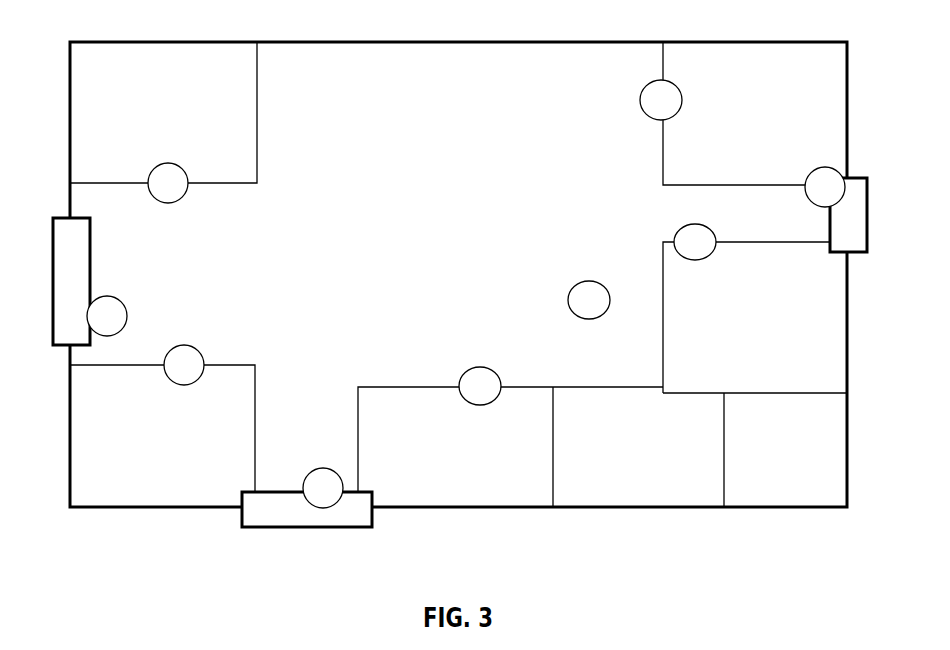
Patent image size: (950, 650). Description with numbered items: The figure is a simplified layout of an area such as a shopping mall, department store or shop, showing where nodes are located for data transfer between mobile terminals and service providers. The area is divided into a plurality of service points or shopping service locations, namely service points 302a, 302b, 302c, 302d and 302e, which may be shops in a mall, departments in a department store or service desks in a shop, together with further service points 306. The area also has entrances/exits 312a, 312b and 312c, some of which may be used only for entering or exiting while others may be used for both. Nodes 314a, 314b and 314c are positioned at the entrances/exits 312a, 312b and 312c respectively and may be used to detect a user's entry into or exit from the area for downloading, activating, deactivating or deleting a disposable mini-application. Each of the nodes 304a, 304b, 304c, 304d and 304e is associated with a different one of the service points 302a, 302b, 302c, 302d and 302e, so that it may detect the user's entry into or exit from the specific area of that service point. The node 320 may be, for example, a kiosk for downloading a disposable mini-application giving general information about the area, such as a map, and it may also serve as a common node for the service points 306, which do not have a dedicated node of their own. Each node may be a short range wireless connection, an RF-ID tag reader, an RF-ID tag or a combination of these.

The service point 302a is at (257, 83).
The service point 302b is at (236, 365).
The service point 302c is at (382, 387).
The service point 302d is at (848, 313).
The service point 302e is at (848, 115).
The node 304a is at (164, 202).
The node 304b is at (190, 346).
The node 304c is at (488, 368).
The node 304d is at (698, 223).
The node 304e is at (675, 87).
The service points 306 is at (710, 450).
The entrance/exit 312a is at (53, 270).
The entrance/exit 312b is at (318, 529).
The entrance/exit 312c is at (867, 205).
The node 314a is at (114, 298).
The node 314b is at (311, 476).
The node 314c is at (807, 198).
The node 320 is at (585, 281).